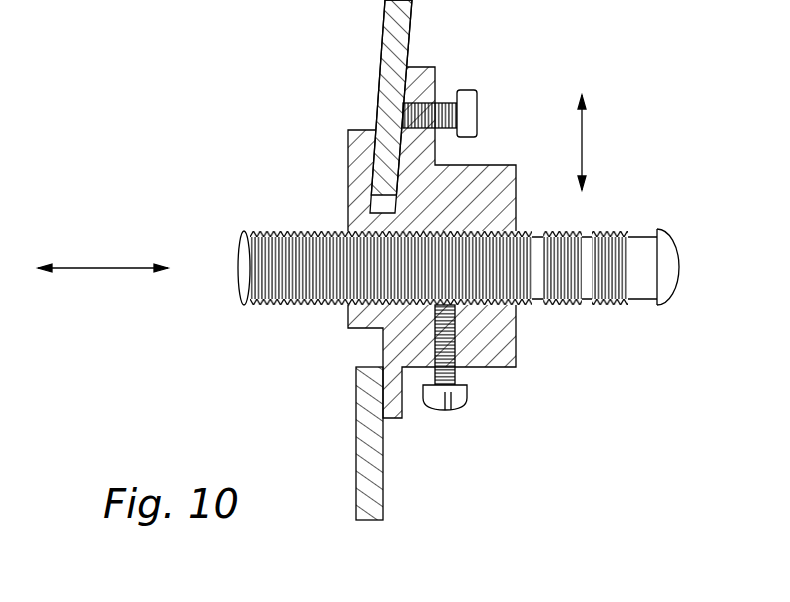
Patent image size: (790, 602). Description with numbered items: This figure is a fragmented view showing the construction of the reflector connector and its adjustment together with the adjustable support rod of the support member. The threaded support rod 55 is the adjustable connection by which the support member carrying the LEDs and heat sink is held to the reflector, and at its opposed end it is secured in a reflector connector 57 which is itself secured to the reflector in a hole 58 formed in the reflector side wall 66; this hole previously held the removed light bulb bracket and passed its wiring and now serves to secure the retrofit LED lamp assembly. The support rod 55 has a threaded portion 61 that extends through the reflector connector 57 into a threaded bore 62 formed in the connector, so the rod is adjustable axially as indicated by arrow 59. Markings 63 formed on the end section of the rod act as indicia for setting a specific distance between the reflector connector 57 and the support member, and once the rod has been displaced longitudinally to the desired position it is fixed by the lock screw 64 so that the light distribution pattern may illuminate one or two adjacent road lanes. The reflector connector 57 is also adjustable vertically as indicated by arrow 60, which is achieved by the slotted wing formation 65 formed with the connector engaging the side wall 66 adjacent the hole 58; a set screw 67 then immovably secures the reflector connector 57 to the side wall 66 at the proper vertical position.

The threaded support rod 55 is at (287, 233).
The reflector connector 57 is at (492, 340).
The hole 58 is at (378, 368).
The arrow 59 is at (115, 268).
The arrow 60 is at (582, 138).
The threaded portion 61 is at (310, 268).
The threaded bore 62 is at (463, 236).
The markings 63 is at (538, 287).
The lock screw 64 is at (448, 392).
The slotted wing formation 65 is at (347, 175).
The reflector side wall 66 is at (388, 87).
The set screw 67 is at (477, 112).